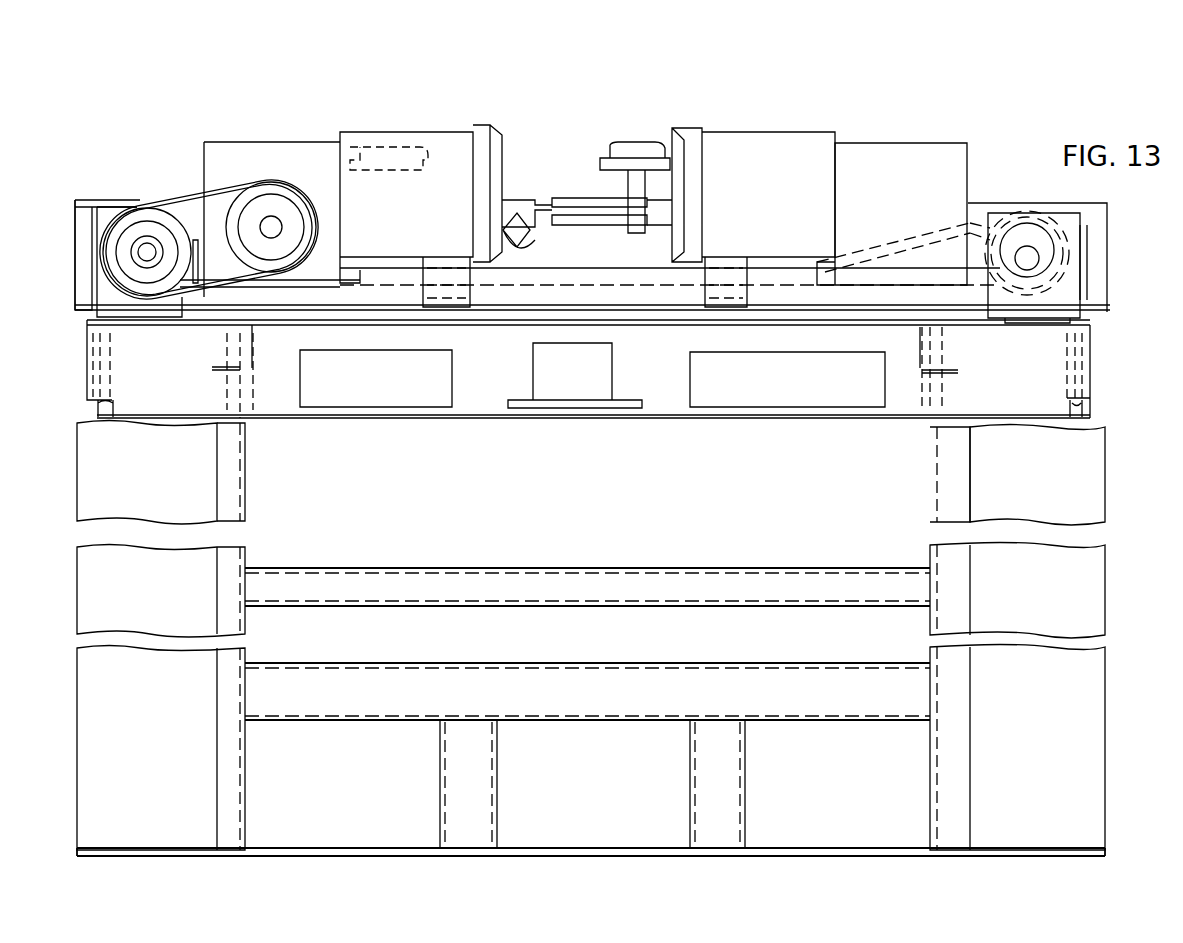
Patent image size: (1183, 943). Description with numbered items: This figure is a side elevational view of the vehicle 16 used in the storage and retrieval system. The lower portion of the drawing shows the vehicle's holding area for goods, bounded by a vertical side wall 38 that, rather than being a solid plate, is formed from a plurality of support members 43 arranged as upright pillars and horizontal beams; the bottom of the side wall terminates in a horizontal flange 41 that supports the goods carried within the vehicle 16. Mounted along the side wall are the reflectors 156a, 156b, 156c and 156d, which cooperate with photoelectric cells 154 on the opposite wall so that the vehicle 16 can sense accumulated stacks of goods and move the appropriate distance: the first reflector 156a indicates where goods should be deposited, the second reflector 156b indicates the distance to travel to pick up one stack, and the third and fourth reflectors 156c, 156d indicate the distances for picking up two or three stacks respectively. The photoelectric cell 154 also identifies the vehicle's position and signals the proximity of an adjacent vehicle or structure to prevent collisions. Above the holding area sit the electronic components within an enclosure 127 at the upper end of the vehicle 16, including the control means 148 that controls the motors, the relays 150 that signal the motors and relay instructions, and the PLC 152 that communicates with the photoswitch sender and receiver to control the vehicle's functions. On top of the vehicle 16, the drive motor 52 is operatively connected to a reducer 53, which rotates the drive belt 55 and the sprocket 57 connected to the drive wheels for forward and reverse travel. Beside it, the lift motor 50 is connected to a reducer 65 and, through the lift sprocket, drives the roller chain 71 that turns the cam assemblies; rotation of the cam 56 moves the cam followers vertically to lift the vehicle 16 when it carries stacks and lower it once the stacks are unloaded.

The photoelectric cell 154 is at (90, 207).
The sprocket 57 is at (158, 201).
The drive belt 55 is at (198, 199).
The reducer 53 is at (217, 148).
The drive motor 52 is at (417, 221).
The lift motor 50 is at (777, 216).
The reducer 65 is at (916, 206).
The roller chain 71 is at (975, 227).
The rotatable cam 56 is at (1013, 242).
The enclosure 127 is at (1088, 412).
The vehicle 16 is at (1122, 463).
The side wall 38 is at (90, 470).
The programmable logic controller 152 is at (370, 380).
The relays 150 is at (572, 388).
The control means 148 is at (815, 388).
The support member 43 is at (66, 781).
The horizontal flange 41 is at (1105, 853).
The reflector 156a is at (162, 693).
The reflector 156b is at (322, 696).
The reflector 156c is at (598, 697).
The reflector 156d is at (847, 699).